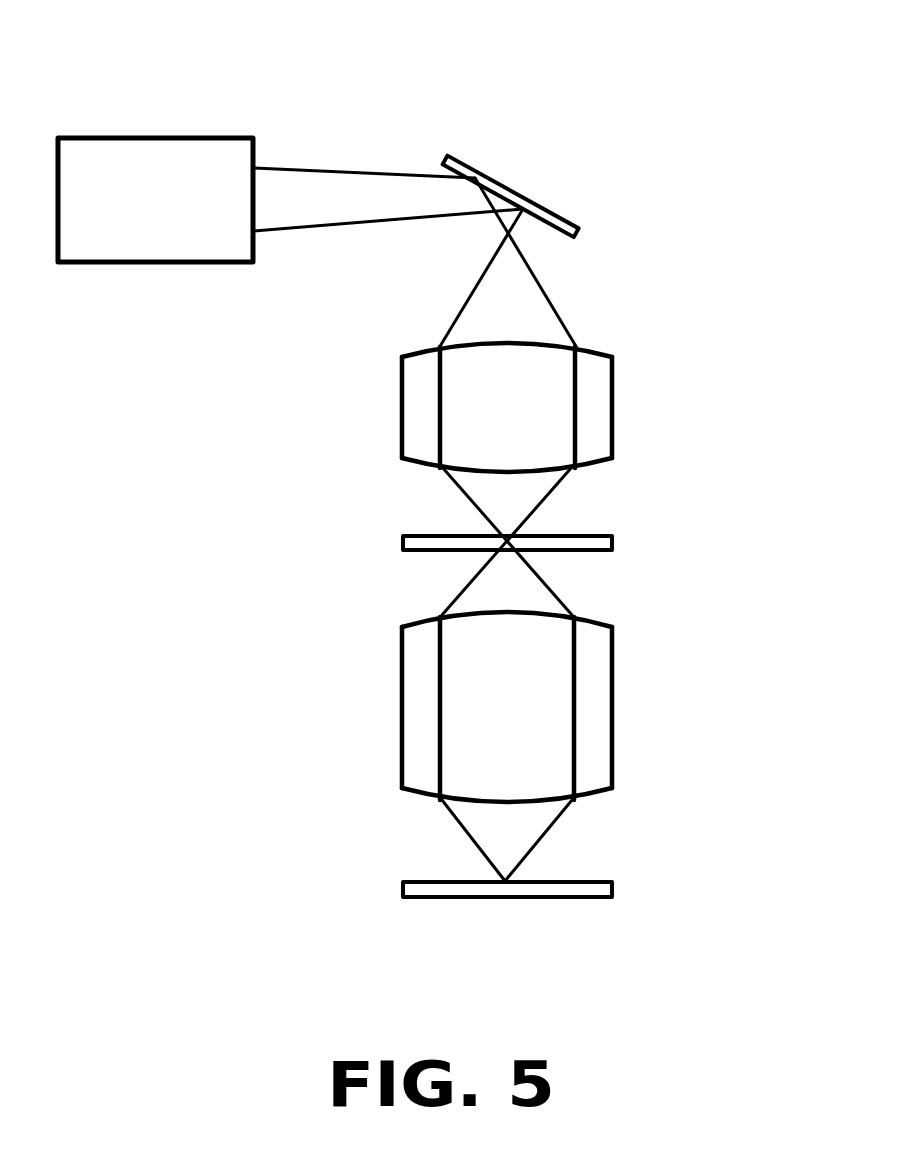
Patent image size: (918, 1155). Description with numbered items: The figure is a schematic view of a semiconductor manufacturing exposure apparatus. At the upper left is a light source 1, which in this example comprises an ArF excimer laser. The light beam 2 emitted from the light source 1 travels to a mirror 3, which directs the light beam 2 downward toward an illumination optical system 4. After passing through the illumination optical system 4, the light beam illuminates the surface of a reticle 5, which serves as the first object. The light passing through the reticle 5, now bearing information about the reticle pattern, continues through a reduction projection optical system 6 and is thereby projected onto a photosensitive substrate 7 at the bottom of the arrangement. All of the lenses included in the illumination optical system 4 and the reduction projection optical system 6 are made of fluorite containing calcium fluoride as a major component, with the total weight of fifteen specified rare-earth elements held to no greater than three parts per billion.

The light source 1 is at (148, 138).
The light beam 2 is at (550, 305).
The mirror 3 is at (510, 182).
The illumination optical system 4 is at (615, 393).
The reticle 5 is at (577, 535).
The reduction projection optical system 6 is at (553, 677).
The photosensitive substrate 7 is at (577, 878).